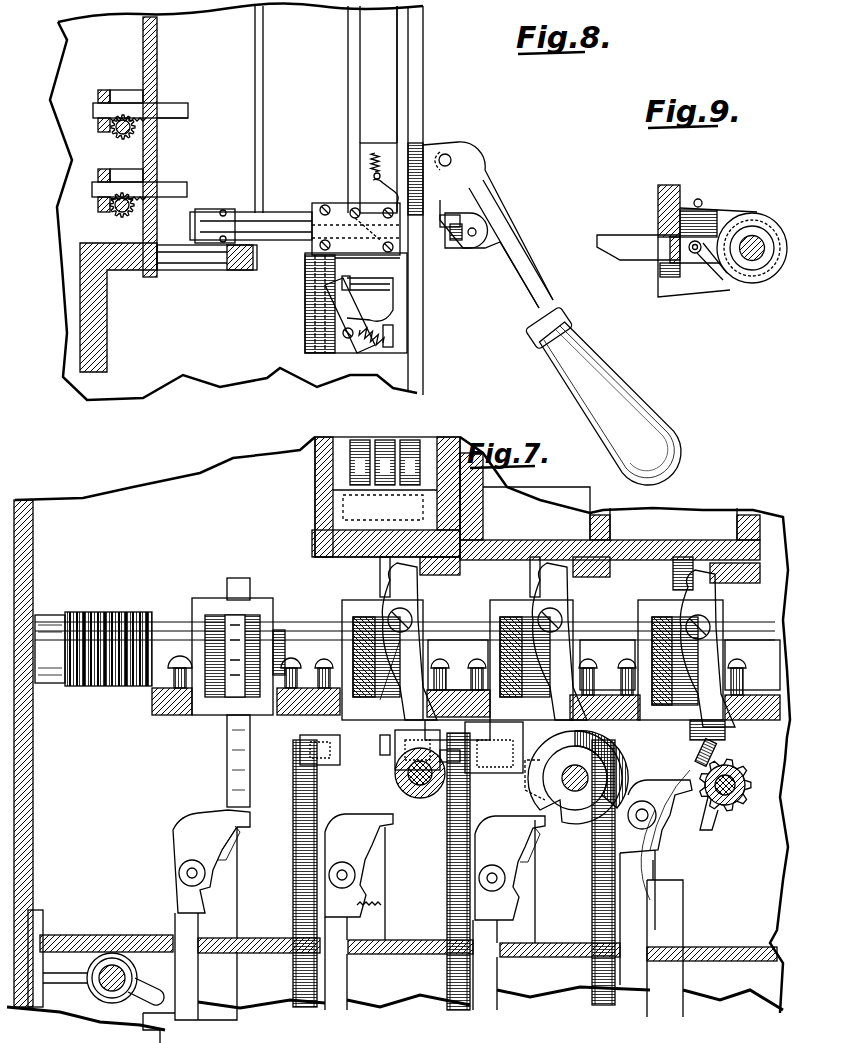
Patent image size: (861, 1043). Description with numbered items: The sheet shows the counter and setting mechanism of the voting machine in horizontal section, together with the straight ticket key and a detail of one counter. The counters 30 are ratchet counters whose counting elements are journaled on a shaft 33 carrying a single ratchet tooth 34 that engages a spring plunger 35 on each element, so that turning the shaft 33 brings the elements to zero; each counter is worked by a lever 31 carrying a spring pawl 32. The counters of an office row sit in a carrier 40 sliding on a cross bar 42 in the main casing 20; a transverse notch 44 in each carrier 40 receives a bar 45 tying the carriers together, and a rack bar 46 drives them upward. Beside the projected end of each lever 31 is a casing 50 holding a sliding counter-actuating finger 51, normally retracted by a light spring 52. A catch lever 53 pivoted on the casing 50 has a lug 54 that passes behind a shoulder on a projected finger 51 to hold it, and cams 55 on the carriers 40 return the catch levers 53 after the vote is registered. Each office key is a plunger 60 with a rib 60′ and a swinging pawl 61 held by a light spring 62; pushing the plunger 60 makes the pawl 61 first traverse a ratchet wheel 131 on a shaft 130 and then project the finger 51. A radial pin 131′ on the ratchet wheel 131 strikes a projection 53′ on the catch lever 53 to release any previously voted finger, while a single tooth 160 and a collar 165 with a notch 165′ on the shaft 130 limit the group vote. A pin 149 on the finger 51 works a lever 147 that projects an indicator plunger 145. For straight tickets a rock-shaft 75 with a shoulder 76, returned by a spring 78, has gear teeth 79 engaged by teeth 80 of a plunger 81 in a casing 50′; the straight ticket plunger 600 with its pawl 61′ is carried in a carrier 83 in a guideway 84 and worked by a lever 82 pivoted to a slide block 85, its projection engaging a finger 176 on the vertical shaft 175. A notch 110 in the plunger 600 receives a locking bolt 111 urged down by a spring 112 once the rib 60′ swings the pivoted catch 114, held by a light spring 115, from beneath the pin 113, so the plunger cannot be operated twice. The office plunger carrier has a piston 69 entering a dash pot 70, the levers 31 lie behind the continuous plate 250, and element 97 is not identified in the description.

In FIG. 8, the main casing 20 is at (195, 365).
In FIG. 7, the main casing 20 is at (33, 785).
In FIG. 9, the counter 30 is at (760, 213).
In FIG. 7, the counter 30 is at (420, 440).
In FIG. 9, the counter lever 31 is at (618, 235).
In FIG. 7, the counter lever 31 is at (380, 572).
In FIG. 9, the spring pawl 32 is at (705, 262).
In FIG. 9, the shaft 33 is at (752, 261).
In FIG. 9, the ratchet tooth 34 is at (750, 245).
In FIG. 9, the spring plunger 35 is at (770, 275).
In FIG. 7, the carrier 40 is at (313, 500).
In FIG. 8, the cross bar 42 is at (100, 334).
In FIG. 8, the transverse notch 44 is at (335, 310).
In FIG. 8, the bar 45 is at (395, 315).
In FIG. 8, the rack bar 46 is at (372, 348).
In FIG. 7, the casing 50 is at (490, 620).
In FIG. 8, the casing 50′ is at (116, 90).
In FIG. 7, the casing 50′ is at (203, 605).
In FIG. 7, the counter-actuating finger 51 is at (545, 640).
In FIG. 7, the light spring 52 is at (353, 655).
In FIG. 7, the catch lever 53 is at (410, 650).
In FIG. 7, the projection 53′ is at (447, 690).
In FIG. 7, the lug 54 is at (590, 685).
In FIG. 7, the cam 55 is at (455, 567).
In FIG. 7, the plunger 60 is at (388, 822).
In FIG. 8, the rib 60′ is at (462, 222).
In FIG. 7, the pawl 61 is at (365, 845).
In FIG. 8, the pawl 61′ is at (213, 212).
In FIG. 7, the pawl 61′ is at (180, 835).
In FIG. 7, the light spring 62 is at (383, 905).
In FIG. 8, the vertical piston 69 is at (355, 225).
In FIG. 8, the dash pot 70 is at (310, 343).
In FIG. 8, the rock-shaft 75 is at (113, 212).
In FIG. 7, the rock-shaft 75 is at (296, 625).
In FIG. 7, the longitudinal shoulder 76 is at (305, 655).
In FIG. 7, the returning spring 78 is at (100, 618).
In FIG. 8, the gear teeth 79 is at (115, 135).
In FIG. 7, the gear teeth 79 is at (215, 690).
In FIG. 8, the teeth 80 is at (160, 120).
In FIG. 8, the plunger 81 is at (178, 108).
In FIG. 7, the plunger 81 is at (227, 768).
In FIG. 8, the lever 82 is at (540, 278).
In FIG. 8, the carrier 83 is at (360, 160).
In FIG. 8, the guideway 84 is at (400, 58).
In FIG. 8, the slide block 85 is at (432, 145).
In FIG. 8, the pin 97 is at (342, 283).
In FIG. 8, the notch 110 is at (312, 248).
In FIG. 8, the locking bolt 111 is at (373, 190).
In FIG. 8, the spring 112 is at (377, 152).
In FIG. 8, the pin 113 is at (374, 176).
In FIG. 8, the pivoted catch 114 is at (445, 160).
In FIG. 8, the light spring 115 is at (340, 258).
In FIG. 7, the shaft 130 is at (420, 798).
In FIG. 7, the ratchet wheel 131 is at (712, 812).
In FIG. 7, the radial pin 131′ is at (715, 760).
In FIG. 7, the indicator plunger 145 is at (293, 865).
In FIG. 7, the lever 147 is at (300, 760).
In FIG. 7, the pin 149 is at (395, 760).
In FIG. 7, the single tooth 160 is at (410, 790).
In FIG. 7, the collar 165 is at (660, 880).
In FIG. 7, the notch 165′ is at (545, 800).
In FIG. 7, the vertical shaft 175 is at (112, 965).
In FIG. 7, the radial finger 176 is at (152, 992).
In FIG. 7, the plate 250 is at (152, 710).
In FIG. 8, the straight ticket plunger 600 is at (272, 212).
In FIG. 7, the straight ticket plunger 600 is at (225, 903).